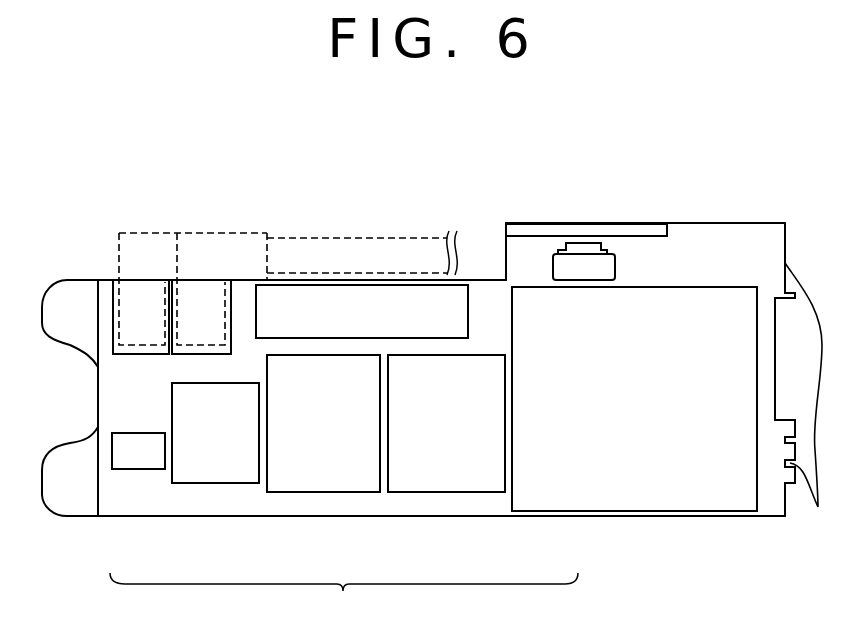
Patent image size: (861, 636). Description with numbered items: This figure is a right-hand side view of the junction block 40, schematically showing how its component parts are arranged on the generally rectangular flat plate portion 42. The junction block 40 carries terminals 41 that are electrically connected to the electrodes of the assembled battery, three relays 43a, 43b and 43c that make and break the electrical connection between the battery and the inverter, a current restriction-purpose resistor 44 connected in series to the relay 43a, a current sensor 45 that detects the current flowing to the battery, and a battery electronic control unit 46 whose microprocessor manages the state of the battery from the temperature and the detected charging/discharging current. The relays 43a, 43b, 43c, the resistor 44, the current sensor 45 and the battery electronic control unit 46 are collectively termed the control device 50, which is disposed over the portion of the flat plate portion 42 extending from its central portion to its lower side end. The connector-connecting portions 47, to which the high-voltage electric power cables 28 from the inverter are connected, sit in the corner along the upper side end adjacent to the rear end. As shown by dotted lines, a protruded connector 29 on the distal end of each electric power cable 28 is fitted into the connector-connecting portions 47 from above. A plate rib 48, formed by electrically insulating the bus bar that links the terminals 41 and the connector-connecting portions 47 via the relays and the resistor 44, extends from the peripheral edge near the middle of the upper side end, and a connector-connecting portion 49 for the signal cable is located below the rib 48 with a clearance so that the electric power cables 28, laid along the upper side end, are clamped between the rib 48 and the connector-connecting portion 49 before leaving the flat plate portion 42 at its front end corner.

The electric power cable 28 is at (337, 238).
The connector 29 is at (219, 232).
The junction block 40 is at (373, 187).
The terminal 41 is at (810, 402).
The flat plate portion 42 is at (738, 260).
The relay 43a is at (213, 483).
The relay 43b is at (325, 493).
The relay 43c is at (445, 493).
The current restriction-purpose resistor 44 is at (363, 338).
The current sensor 45 is at (136, 470).
The battery electronic control unit 46 is at (558, 512).
The connector-connecting portion 47 is at (197, 355).
The plate rib 48 is at (630, 230).
The connector-connecting portion 49 is at (585, 263).
The control device 50 is at (344, 597).